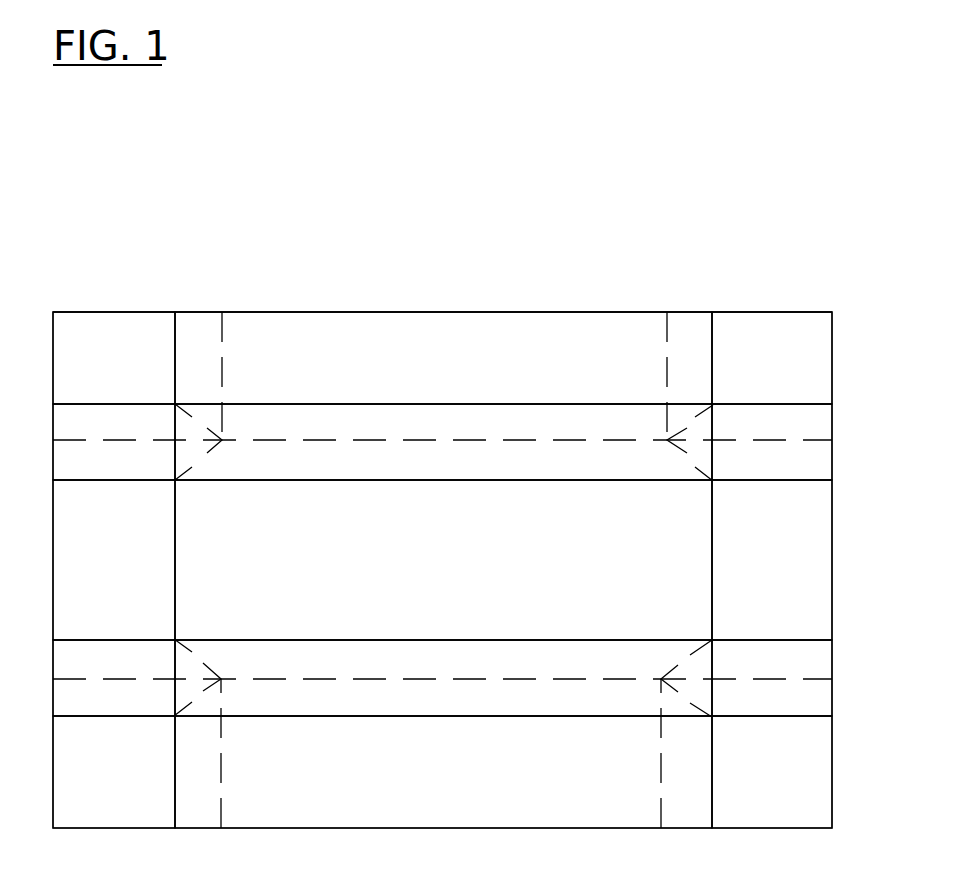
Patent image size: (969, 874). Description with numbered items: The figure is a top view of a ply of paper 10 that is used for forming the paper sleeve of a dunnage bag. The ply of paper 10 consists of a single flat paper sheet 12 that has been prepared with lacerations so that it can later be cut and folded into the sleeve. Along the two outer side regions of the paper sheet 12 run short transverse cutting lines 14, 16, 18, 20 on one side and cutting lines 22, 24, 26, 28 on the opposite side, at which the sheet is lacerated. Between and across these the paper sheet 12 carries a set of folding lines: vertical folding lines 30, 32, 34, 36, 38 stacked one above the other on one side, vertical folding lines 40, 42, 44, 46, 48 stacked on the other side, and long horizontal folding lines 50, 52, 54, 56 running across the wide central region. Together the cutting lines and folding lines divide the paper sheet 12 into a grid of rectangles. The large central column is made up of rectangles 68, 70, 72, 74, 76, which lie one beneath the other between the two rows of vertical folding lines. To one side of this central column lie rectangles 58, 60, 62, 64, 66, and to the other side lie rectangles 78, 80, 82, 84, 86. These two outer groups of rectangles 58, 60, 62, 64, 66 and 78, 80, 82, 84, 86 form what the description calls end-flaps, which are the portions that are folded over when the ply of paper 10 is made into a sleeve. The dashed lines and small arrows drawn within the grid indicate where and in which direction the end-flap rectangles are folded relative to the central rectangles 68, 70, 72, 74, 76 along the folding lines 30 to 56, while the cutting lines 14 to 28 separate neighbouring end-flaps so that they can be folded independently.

The ply of paper 10 is at (775, 151).
The paper sheet 12 is at (447, 312).
The cutting line 14 is at (795, 404).
The cutting line 16 is at (802, 481).
The cutting line 18 is at (793, 640).
The cutting line 20 is at (800, 717).
The cutting line 22 is at (80, 403).
The cutting line 24 is at (92, 479).
The cutting line 26 is at (97, 638).
The cutting line 28 is at (82, 717).
The folding line 30 is at (713, 391).
The folding line 32 is at (714, 469).
The folding line 34 is at (712, 592).
The folding line 36 is at (712, 692).
The folding line 38 is at (712, 802).
The folding line 40 is at (175, 383).
The folding line 42 is at (173, 478).
The folding line 44 is at (175, 583).
The folding line 46 is at (173, 668).
The folding line 48 is at (174, 770).
The folding line 50 is at (482, 405).
The folding line 52 is at (488, 480).
The folding line 54 is at (480, 640).
The folding line 56 is at (483, 715).
The rectangle 58 is at (772, 358).
The rectangle 60 is at (772, 442).
The rectangle 62 is at (772, 560).
The rectangle 64 is at (772, 678).
The rectangle 66 is at (772, 772).
The rectangle 68 is at (443, 358).
The rectangle 70 is at (443, 442).
The rectangle 72 is at (443, 560).
The rectangle 74 is at (443, 678).
The rectangle 76 is at (443, 772).
The rectangle 78 is at (114, 358).
The rectangle 80 is at (114, 442).
The rectangle 82 is at (114, 560).
The rectangle 84 is at (114, 678).
The rectangle 86 is at (114, 772).